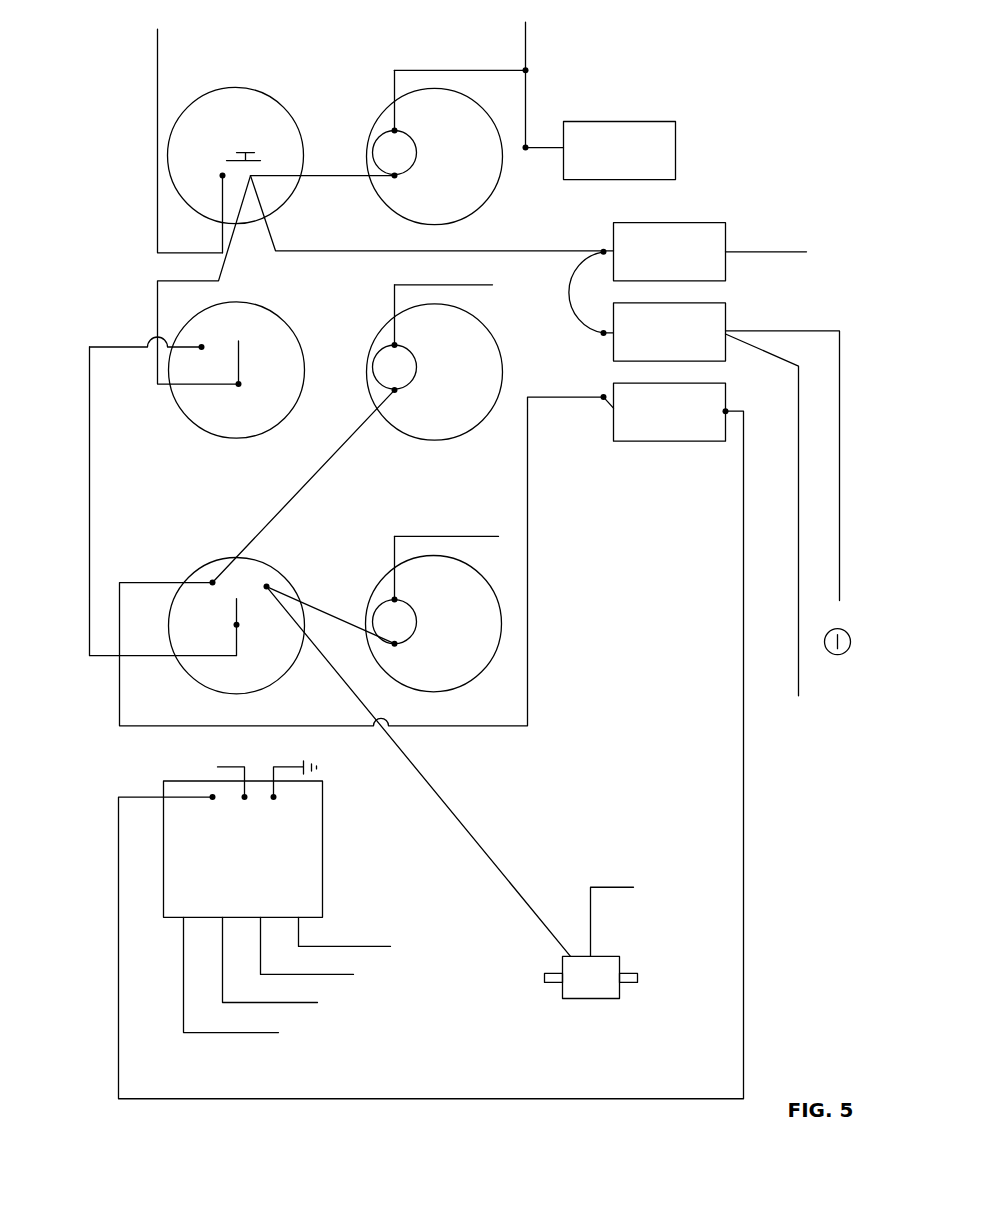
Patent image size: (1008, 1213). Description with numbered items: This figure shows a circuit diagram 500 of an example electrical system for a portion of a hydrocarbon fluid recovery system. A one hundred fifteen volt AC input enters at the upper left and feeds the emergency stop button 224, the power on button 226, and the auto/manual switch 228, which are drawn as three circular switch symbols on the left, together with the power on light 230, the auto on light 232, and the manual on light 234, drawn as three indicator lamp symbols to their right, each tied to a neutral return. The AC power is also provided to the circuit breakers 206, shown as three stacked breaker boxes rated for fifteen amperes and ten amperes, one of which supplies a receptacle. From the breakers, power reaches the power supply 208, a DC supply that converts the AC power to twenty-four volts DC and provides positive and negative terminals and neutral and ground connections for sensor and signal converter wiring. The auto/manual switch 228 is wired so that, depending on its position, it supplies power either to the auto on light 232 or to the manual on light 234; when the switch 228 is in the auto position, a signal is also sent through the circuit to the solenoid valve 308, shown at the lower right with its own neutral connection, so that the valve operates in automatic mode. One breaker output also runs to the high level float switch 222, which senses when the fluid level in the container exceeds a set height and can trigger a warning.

The circuit diagram 500 is at (131, 27).
The emergency stop button 224 is at (277, 101).
The power on button 226 is at (280, 318).
The auto/manual switch 228 is at (222, 557).
The power on light 230 is at (500, 185).
The auto on light 232 is at (499, 345).
The manual on light 234 is at (502, 627).
The circuit breakers 206 is at (725, 231).
The power supply 208 is at (322, 840).
The high level float switch 222 is at (795, 742).
The solenoid valve 308 is at (619, 965).